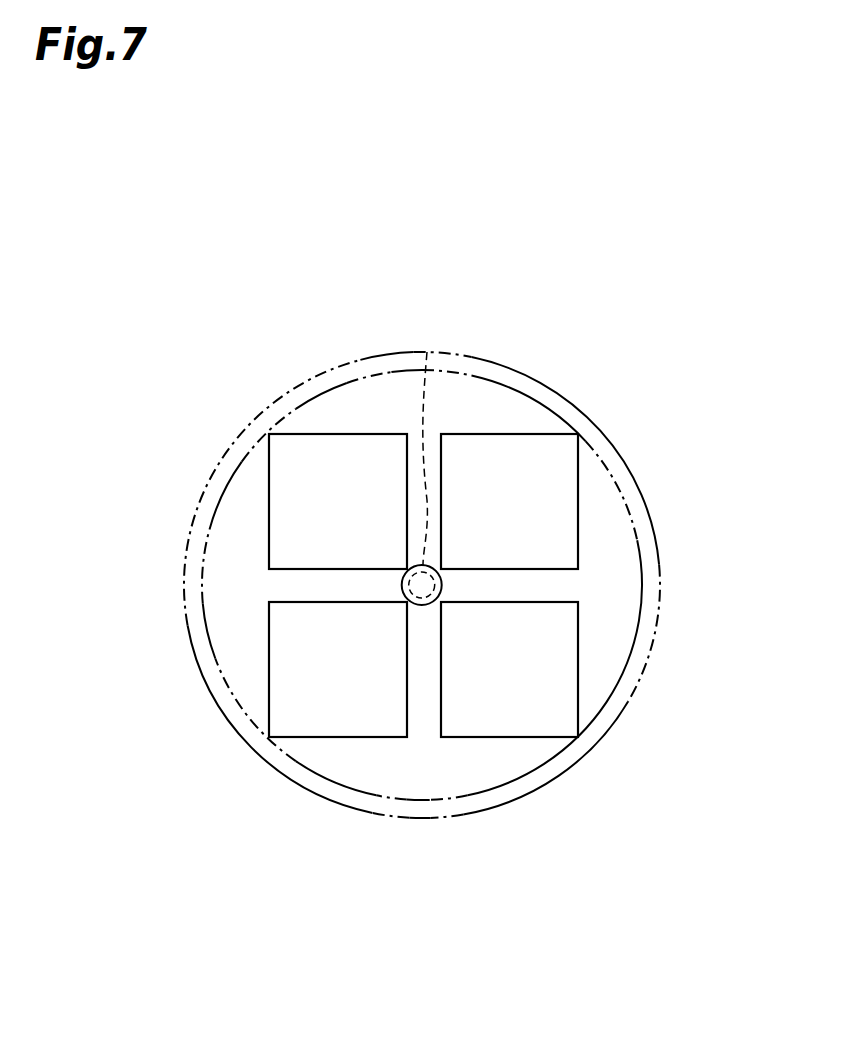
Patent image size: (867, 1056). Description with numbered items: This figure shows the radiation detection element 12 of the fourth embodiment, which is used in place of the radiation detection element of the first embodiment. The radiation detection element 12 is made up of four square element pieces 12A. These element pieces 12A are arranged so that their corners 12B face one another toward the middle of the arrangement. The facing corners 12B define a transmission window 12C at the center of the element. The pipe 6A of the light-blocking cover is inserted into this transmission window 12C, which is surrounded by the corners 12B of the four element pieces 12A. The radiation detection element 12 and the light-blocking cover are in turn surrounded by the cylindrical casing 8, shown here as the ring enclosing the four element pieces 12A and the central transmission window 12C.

The casing 8 is at (528, 368).
The pipe 6A is at (427, 352).
The radiation detection element 12 is at (420, 546).
The element piece 12A is at (310, 487).
The corner 12B is at (392, 555).
The transmission window 12C is at (425, 602).